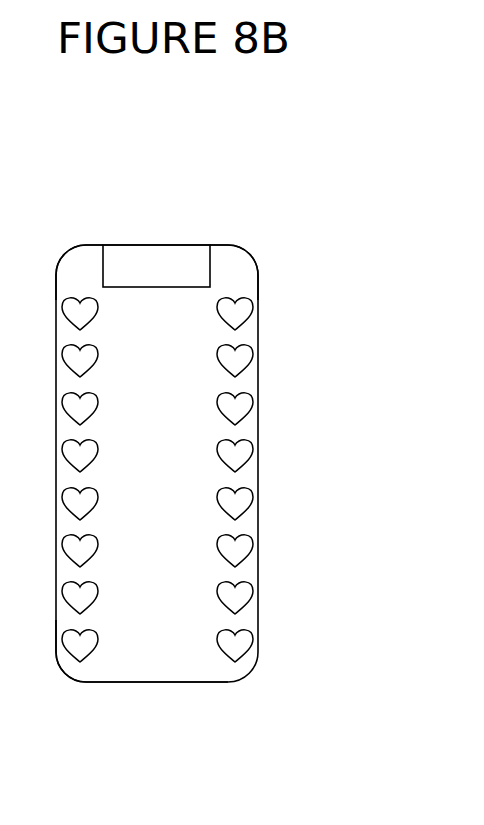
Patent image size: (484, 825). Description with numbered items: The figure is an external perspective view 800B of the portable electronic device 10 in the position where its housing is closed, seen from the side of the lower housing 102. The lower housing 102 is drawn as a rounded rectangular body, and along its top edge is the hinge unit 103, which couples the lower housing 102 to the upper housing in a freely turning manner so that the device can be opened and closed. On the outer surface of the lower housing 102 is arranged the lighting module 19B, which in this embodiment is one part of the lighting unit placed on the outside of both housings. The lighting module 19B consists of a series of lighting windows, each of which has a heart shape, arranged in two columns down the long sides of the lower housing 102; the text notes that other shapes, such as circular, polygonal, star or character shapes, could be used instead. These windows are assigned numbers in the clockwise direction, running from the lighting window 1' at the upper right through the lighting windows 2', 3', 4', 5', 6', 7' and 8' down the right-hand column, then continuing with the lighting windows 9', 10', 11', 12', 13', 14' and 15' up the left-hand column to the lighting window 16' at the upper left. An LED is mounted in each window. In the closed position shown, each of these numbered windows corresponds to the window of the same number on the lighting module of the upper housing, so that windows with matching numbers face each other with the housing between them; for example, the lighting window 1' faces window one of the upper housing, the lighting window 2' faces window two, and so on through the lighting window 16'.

The external perspective view 800B is at (129, 237).
The portable electronic device 10 is at (142, 703).
The hinge unit 103 is at (165, 253).
The lighting module 19B is at (72, 282).
The lower housing 102 is at (233, 263).
The lighting window 1' is at (259, 312).
The lighting window 2' is at (259, 359).
The lighting window 3' is at (259, 407).
The lighting window 4' is at (259, 454).
The lighting window 5' is at (259, 502).
The lighting window 6' is at (259, 549).
The lighting window 7' is at (259, 596).
The lighting window 8' is at (259, 644).
The lighting window 9' is at (57, 644).
The lighting window 10' is at (50, 596).
The lighting window 11' is at (50, 549).
The lighting window 12' is at (50, 502).
The lighting window 13' is at (50, 454).
The lighting window 14' is at (50, 407).
The lighting window 15' is at (50, 359).
The lighting window 16' is at (50, 312).